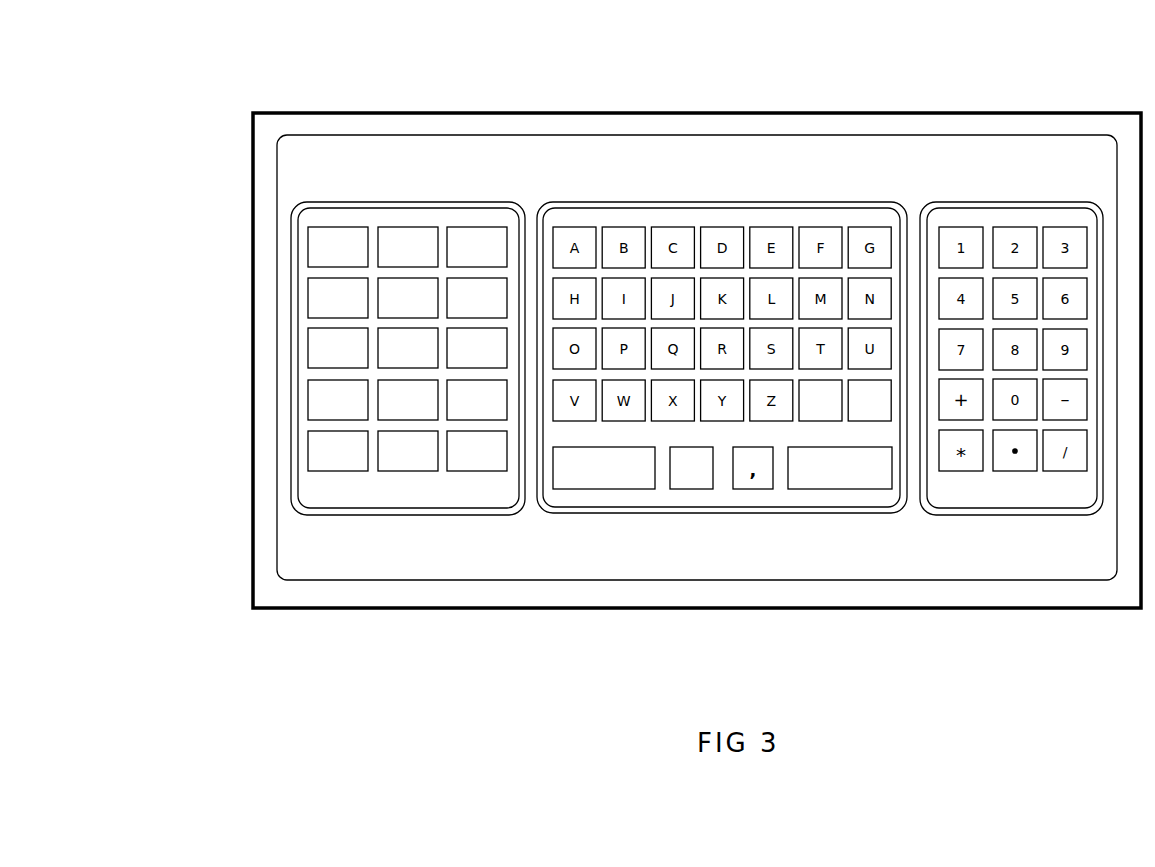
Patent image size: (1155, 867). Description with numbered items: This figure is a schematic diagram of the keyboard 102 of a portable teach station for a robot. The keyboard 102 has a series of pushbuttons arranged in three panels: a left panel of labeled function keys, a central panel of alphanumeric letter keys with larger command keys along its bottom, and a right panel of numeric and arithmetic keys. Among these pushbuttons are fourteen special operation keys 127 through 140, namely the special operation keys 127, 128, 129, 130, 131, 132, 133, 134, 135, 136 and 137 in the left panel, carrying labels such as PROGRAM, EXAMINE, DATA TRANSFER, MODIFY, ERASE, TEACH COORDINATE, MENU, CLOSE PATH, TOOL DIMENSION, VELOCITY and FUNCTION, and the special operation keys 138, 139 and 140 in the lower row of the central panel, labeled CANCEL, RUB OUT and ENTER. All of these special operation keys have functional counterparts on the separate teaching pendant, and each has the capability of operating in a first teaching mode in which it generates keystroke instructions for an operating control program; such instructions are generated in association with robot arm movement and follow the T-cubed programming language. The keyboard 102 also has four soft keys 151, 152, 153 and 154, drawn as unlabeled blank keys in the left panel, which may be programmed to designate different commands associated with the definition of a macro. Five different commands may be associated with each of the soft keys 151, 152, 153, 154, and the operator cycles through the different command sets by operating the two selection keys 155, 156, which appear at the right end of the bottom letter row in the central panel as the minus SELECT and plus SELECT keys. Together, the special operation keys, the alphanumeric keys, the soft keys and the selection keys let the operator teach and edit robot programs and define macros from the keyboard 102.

The keyboard 102 is at (962, 87).
The special operation key 127 is at (308, 455).
The special operation key 128 is at (308, 407).
The special operation key 129 is at (447, 360).
The special operation key 130 is at (378, 352).
The special operation key 131 is at (308, 340).
The special operation key 132 is at (447, 298).
The special operation key 133 is at (378, 282).
The special operation key 134 is at (308, 280).
The special operation key 135 is at (447, 254).
The special operation key 136 is at (378, 231).
The special operation key 137 is at (308, 229).
The special operation key 138 is at (595, 489).
The special operation key 139 is at (690, 489).
The special operation key 140 is at (808, 489).
The soft key 151 is at (402, 421).
The soft key 152 is at (407, 472).
The soft key 153 is at (475, 421).
The soft key 154 is at (478, 472).
The command set selection key 155 is at (828, 422).
The command set selection key 156 is at (873, 422).